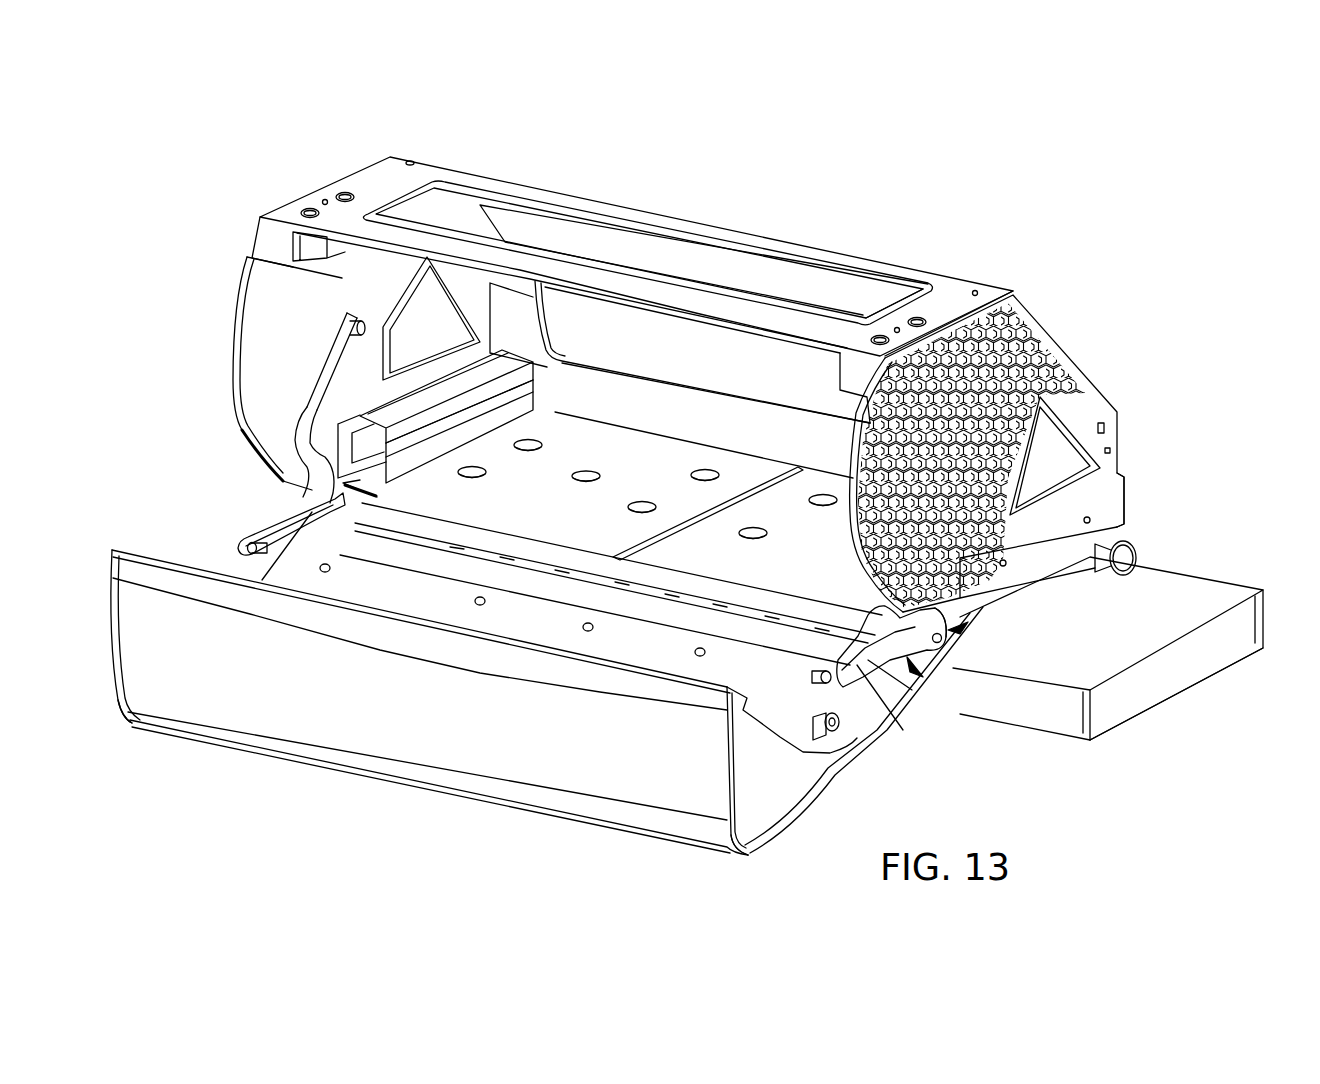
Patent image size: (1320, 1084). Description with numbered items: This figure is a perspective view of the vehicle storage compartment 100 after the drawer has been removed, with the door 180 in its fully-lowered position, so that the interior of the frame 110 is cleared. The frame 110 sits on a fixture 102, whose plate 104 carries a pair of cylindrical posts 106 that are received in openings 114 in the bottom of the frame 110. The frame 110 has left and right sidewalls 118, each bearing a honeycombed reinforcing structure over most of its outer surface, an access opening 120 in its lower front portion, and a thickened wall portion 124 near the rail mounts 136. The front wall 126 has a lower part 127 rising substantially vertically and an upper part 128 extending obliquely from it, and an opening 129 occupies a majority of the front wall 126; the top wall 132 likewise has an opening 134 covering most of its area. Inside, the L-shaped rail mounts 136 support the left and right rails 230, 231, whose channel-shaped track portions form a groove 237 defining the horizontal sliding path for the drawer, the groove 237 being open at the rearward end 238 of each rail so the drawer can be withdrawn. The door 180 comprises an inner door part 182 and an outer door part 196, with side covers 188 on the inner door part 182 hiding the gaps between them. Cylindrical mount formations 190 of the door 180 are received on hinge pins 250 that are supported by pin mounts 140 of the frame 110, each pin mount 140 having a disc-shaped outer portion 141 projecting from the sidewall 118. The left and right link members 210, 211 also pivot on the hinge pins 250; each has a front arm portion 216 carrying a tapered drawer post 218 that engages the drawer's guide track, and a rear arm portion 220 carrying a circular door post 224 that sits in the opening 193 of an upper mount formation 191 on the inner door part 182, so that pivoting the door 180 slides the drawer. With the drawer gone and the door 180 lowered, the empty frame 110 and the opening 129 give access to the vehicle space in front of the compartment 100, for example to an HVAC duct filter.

The storage compartment 100 is at (182, 212).
The fixture 102 is at (1258, 617).
The plate 104 is at (1250, 640).
The cylindrical posts 106 is at (585, 471).
The frame 110 is at (366, 176).
The openings 114 is at (570, 480).
The sidewalls 118 is at (252, 297).
The access opening 120 is at (1080, 458).
The thickened wall portion 124 is at (1120, 499).
The front wall 126 is at (530, 321).
The lower part 127 is at (679, 420).
The upper part 128 is at (519, 286).
The opening 129 is at (661, 376).
The top wall 132 is at (947, 287).
The opening 134 is at (822, 268).
The rail mounts 136 is at (303, 411).
The pin mounts 140 is at (948, 628).
The outer portion 141 is at (977, 620).
The door 180 is at (443, 758).
The inner door part 182 is at (767, 825).
The side covers 188 is at (750, 830).
The mount formations 190 is at (376, 512).
The mount formations 191 is at (817, 717).
The opening 193 is at (842, 733).
The outer door part 196 is at (183, 697).
The left link member 210 is at (320, 380).
The right link member 211 is at (870, 655).
The front arm portion 216 is at (340, 338).
The drawer post 218 is at (356, 323).
The rear arm portion 220 is at (857, 663).
The door post 224 is at (820, 672).
The left rail 230 is at (387, 420).
The right rail 231 is at (1113, 525).
The groove 237 is at (447, 427).
The rearward end 238 is at (371, 437).
The hinge pins 250 is at (938, 642).